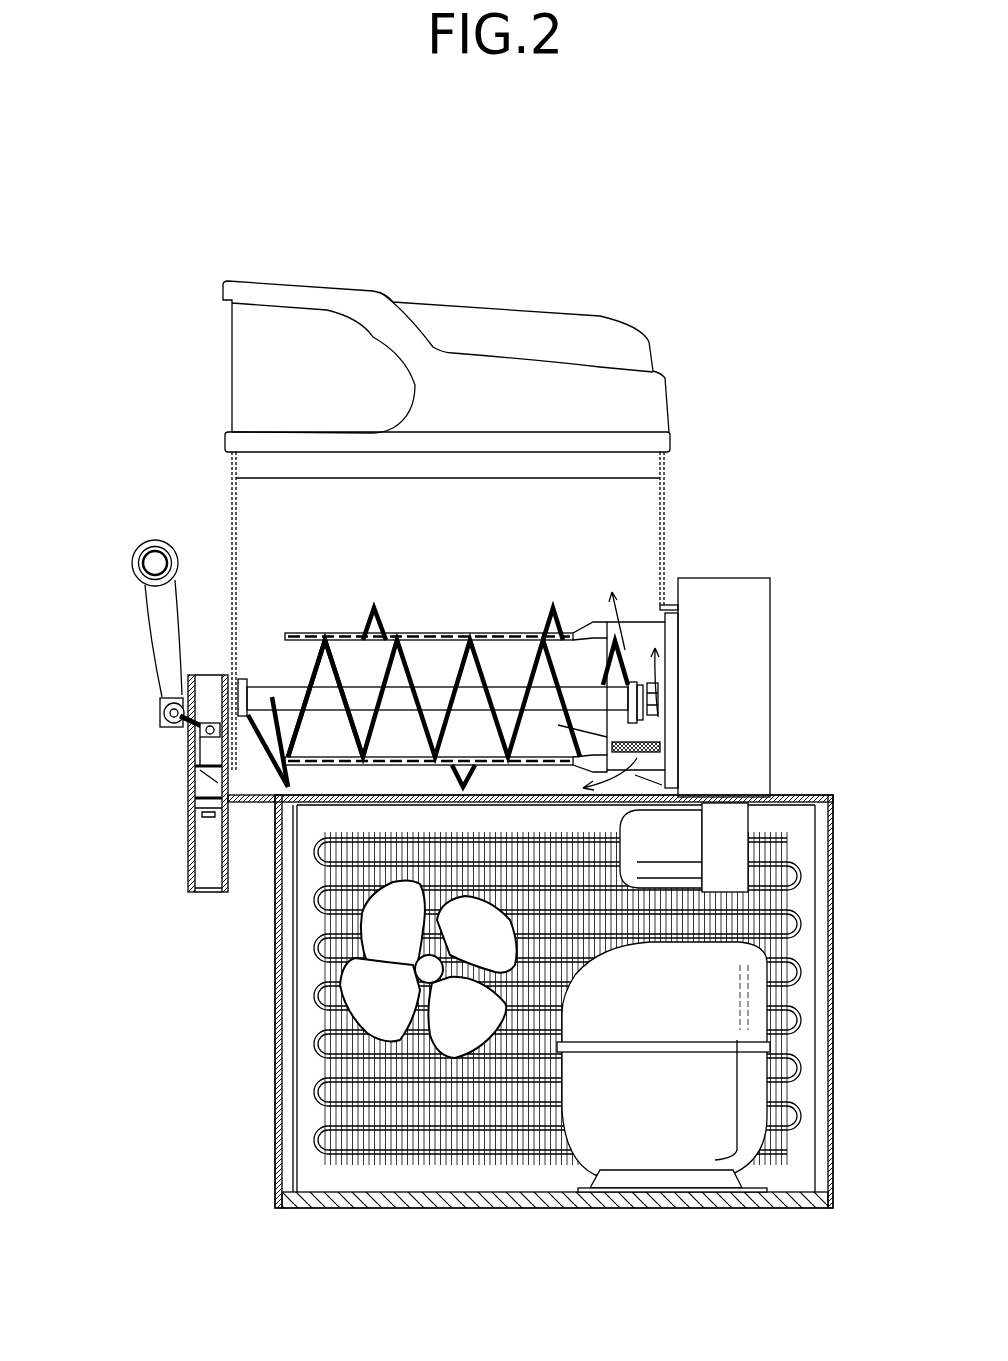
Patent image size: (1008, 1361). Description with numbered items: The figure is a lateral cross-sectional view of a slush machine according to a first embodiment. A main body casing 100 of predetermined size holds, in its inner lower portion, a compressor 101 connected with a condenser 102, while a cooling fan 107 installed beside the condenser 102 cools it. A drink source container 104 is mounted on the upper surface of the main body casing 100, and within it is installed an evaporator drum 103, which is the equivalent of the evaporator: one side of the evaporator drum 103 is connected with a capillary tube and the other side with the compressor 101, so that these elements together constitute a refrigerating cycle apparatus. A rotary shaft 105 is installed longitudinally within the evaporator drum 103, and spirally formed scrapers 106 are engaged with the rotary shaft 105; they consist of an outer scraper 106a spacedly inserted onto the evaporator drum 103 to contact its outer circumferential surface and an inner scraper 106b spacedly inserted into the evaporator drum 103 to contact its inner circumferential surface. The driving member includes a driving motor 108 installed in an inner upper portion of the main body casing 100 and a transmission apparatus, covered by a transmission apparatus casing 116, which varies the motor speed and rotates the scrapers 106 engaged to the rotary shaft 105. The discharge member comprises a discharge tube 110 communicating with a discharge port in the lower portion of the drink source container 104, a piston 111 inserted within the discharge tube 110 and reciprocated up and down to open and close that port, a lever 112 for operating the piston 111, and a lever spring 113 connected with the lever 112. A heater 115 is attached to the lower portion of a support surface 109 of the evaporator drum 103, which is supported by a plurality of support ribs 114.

The main body casing 100 is at (838, 888).
The compressor 101 is at (598, 1136).
The condenser 102 is at (337, 1115).
The evaporator drum 103 is at (306, 632).
The drink source container 104 is at (240, 440).
The rotary shaft 105 is at (503, 690).
The scrapers 106 is at (418, 551).
The outer scraper 106a is at (338, 633).
The inner scraper 106b is at (385, 615).
The cooling fan 107 is at (352, 997).
The driving motor 108 is at (686, 833).
The support surface 109 is at (673, 625).
The discharge tube 110 is at (190, 863).
The piston 111 is at (188, 763).
The lever 112 is at (158, 607).
The lever spring 113 is at (215, 727).
The support ribs 114 is at (643, 630).
The heater 115 is at (663, 747).
The transmission apparatus casing 116 is at (745, 672).